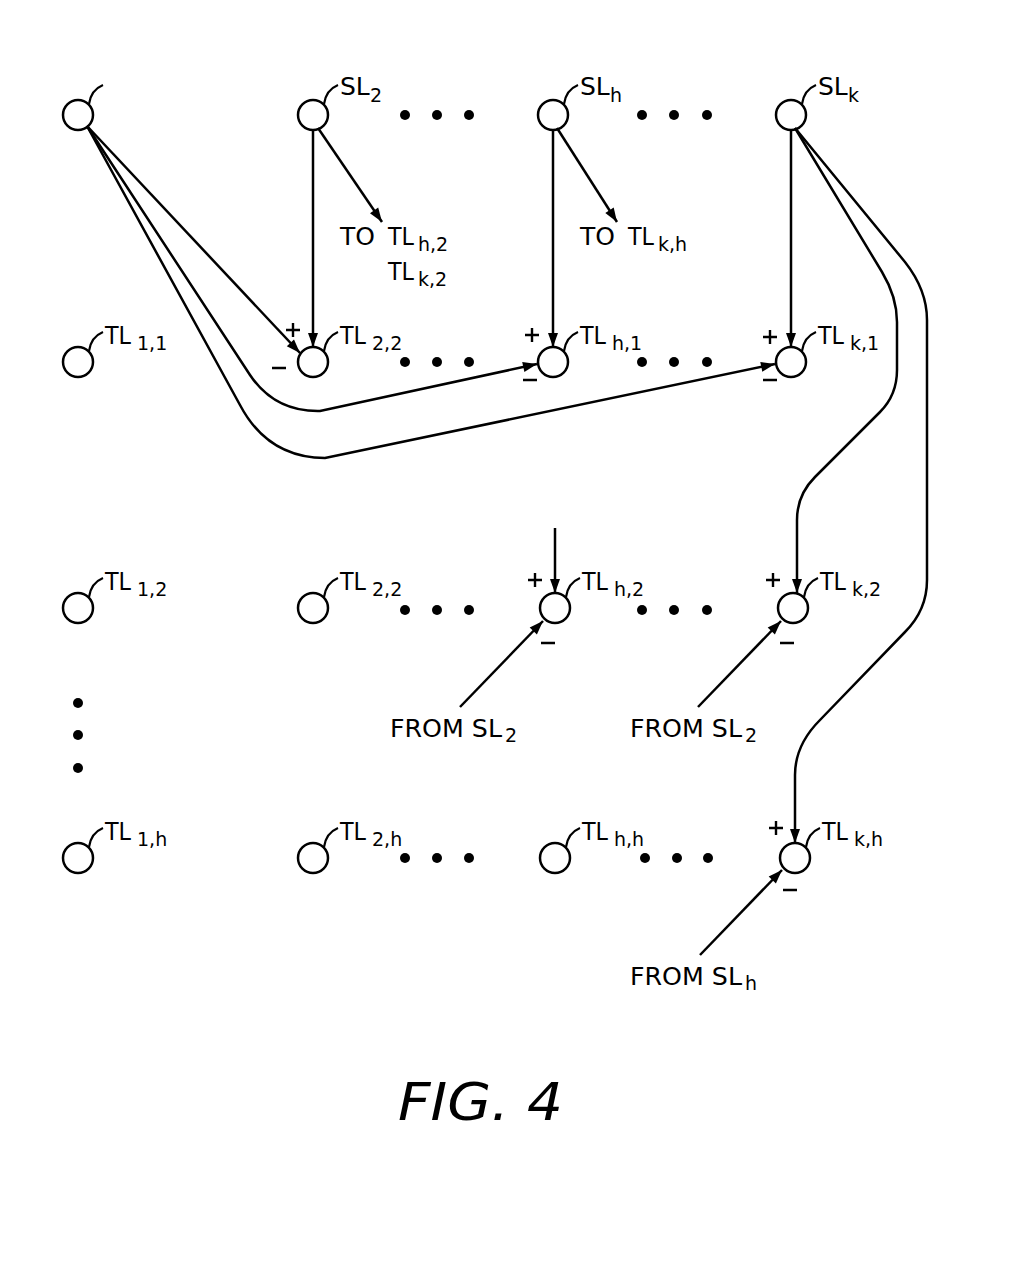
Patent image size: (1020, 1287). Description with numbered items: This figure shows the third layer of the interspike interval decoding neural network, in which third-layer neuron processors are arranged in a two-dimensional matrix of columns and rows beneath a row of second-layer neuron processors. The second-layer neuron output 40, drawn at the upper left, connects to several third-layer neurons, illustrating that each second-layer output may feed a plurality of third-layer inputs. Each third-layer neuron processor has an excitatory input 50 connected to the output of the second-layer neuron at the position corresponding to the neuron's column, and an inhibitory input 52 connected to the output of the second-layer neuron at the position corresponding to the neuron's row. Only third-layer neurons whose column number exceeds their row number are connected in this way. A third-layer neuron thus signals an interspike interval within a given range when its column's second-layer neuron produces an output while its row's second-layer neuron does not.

The source location neuron SL 40 is at (92, 124).
The excitatory input 50 is at (312, 262).
The inhibitory input 52 is at (170, 221).